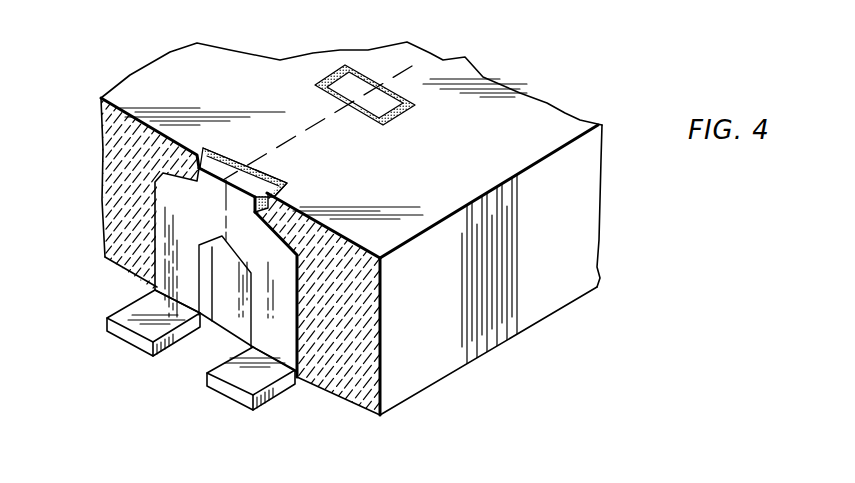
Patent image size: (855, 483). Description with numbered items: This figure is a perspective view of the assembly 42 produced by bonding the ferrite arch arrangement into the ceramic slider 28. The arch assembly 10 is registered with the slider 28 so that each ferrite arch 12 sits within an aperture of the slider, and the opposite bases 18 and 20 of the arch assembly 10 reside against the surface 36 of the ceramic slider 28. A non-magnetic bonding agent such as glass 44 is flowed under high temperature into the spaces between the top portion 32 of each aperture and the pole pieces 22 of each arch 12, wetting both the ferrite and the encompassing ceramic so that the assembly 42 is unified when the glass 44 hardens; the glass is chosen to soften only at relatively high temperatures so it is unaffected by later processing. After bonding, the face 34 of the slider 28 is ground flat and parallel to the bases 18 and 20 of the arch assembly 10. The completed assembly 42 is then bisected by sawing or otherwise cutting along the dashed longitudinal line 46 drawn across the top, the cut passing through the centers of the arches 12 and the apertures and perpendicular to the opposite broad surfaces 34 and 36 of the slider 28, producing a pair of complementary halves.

The arch assembly 10 is at (198, 244).
The ferrite arch 12 is at (167, 233).
The base 18 is at (113, 315).
The base 20 is at (209, 383).
The pole piece 22 is at (280, 144).
The ceramic slider 28 is at (199, 38).
The top portion of aperture 32 is at (330, 72).
The face of slider 34 is at (555, 113).
The surface of slider 36 is at (560, 308).
The assembly 42 is at (325, 241).
The glass 44 is at (227, 146).
The dashed longitudinal line 46 is at (425, 62).